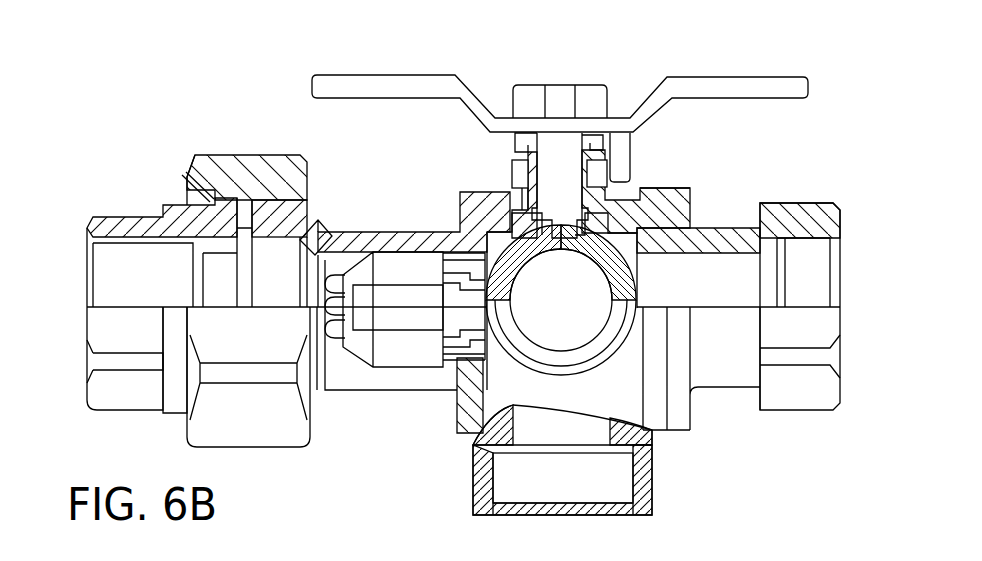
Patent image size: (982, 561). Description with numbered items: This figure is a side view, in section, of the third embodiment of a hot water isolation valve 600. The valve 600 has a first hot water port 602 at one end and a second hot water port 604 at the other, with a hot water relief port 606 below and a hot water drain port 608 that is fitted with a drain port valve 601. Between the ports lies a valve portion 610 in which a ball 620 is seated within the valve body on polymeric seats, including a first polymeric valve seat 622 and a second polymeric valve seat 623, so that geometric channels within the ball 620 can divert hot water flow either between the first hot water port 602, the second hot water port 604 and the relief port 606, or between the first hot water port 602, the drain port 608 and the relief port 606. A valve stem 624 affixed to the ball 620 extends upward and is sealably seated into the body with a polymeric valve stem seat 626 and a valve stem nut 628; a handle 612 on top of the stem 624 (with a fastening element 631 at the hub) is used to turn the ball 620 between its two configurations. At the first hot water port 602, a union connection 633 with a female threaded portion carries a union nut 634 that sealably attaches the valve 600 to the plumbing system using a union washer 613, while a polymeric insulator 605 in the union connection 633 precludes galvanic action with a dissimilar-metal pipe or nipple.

The hot water isolation valve 600 is at (842, 133).
The drain port valve 601 is at (482, 404).
The first hot water port 602 is at (87, 303).
The second hot water port 604 is at (841, 289).
The insulator 605 is at (195, 162).
The hot water relief port 606 is at (655, 496).
The hot water drain port 608 is at (566, 332).
The valve portion 610 is at (678, 196).
The handle 612 is at (735, 77).
The union washer 613 is at (186, 185).
The ball 620 is at (646, 200).
The first polymeric valve seat 622 is at (460, 198).
The second polymeric valve seat 623 is at (637, 247).
The valve stem 624 is at (548, 143).
The polymeric valve stem seat 626 is at (512, 176).
The valve stem nut 628 is at (515, 144).
The handle nut 631 is at (561, 86).
The union connection 633 is at (115, 218).
The union nut 634 is at (248, 155).